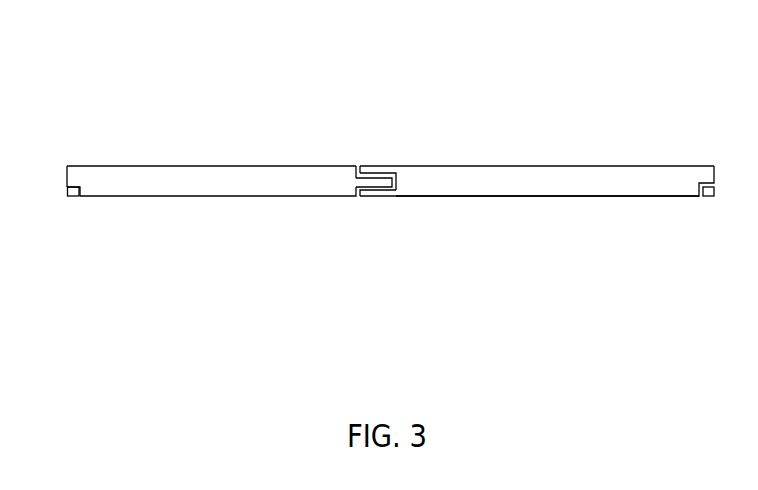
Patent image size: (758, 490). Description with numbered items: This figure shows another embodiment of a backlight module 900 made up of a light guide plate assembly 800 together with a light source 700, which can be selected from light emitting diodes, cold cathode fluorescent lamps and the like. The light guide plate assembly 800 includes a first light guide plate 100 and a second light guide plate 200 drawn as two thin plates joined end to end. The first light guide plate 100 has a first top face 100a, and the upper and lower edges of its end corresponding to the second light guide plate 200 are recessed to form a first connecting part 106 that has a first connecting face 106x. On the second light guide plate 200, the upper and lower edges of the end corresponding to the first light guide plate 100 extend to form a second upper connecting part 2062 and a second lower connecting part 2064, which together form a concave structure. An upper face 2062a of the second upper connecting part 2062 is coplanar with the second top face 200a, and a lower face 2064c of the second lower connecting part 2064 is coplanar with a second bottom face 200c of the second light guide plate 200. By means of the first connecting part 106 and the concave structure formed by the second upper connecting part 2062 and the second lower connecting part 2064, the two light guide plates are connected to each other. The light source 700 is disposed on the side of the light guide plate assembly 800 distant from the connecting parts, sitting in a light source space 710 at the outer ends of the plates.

The backlight module 900 is at (128, 38).
The light guide plate assembly 800 is at (446, 45).
The first light guide plate 100 is at (258, 190).
The first top face 100a is at (159, 165).
The first connecting part 106 is at (363, 180).
The first connecting face 106x is at (358, 172).
The second light guide plate 200 is at (493, 190).
The second top face 200a is at (576, 166).
The second bottom face 200c is at (572, 196).
The second upper connecting part 2062 is at (388, 169).
The upper face of second upper connecting part 2062a is at (373, 165).
The second lower connecting part 2064 is at (382, 196).
The lower face of second lower connecting part 2064c is at (365, 196).
The light source 700 is at (70, 190).
The light source space 710 is at (66, 188).